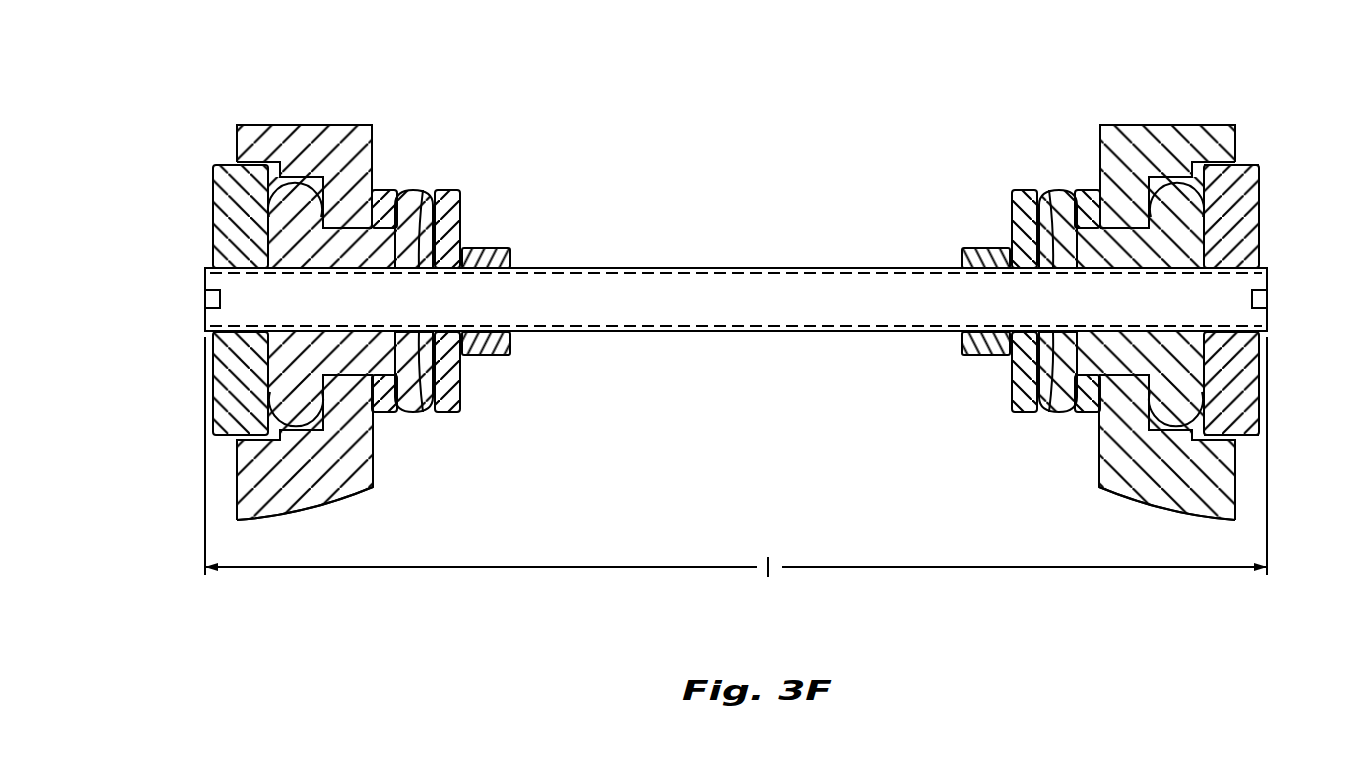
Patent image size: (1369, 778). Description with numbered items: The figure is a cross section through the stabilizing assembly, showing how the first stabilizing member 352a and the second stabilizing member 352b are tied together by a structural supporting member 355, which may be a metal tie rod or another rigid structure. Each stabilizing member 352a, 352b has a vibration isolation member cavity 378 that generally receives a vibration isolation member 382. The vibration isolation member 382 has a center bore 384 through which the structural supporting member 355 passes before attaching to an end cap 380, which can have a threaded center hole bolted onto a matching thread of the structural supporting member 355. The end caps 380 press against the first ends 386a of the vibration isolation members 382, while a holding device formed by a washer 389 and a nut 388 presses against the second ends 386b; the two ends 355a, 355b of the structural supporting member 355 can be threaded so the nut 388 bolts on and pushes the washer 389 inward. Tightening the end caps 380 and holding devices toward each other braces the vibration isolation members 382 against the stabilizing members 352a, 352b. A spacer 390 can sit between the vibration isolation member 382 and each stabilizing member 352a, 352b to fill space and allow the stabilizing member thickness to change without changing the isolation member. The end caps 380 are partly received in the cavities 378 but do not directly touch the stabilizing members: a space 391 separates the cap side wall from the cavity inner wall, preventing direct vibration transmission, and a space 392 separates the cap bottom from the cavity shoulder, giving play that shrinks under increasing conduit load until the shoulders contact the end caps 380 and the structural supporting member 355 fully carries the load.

The structural supporting member 355 is at (767, 258).
The first end of the structural supporting member 355a is at (293, 302).
The second end of the structural supporting member 355b is at (1179, 302).
The first stabilizing member 352a is at (290, 178).
The second stabilizing member 352b is at (1182, 178).
The vibration isolation member cavity 378 is at (287, 125).
The end cap 380 is at (213, 378).
The vibration isolation member 382 is at (302, 182).
The center bore 384 is at (423, 193).
The first end of the vibration isolation member 386a is at (293, 430).
The second end of the vibration isolation member 386b is at (458, 372).
The nut 388 is at (485, 248).
The washer 389 is at (460, 397).
The spacer 390 is at (384, 414).
The space 391 is at (1230, 163).
The space 392 is at (1262, 427).